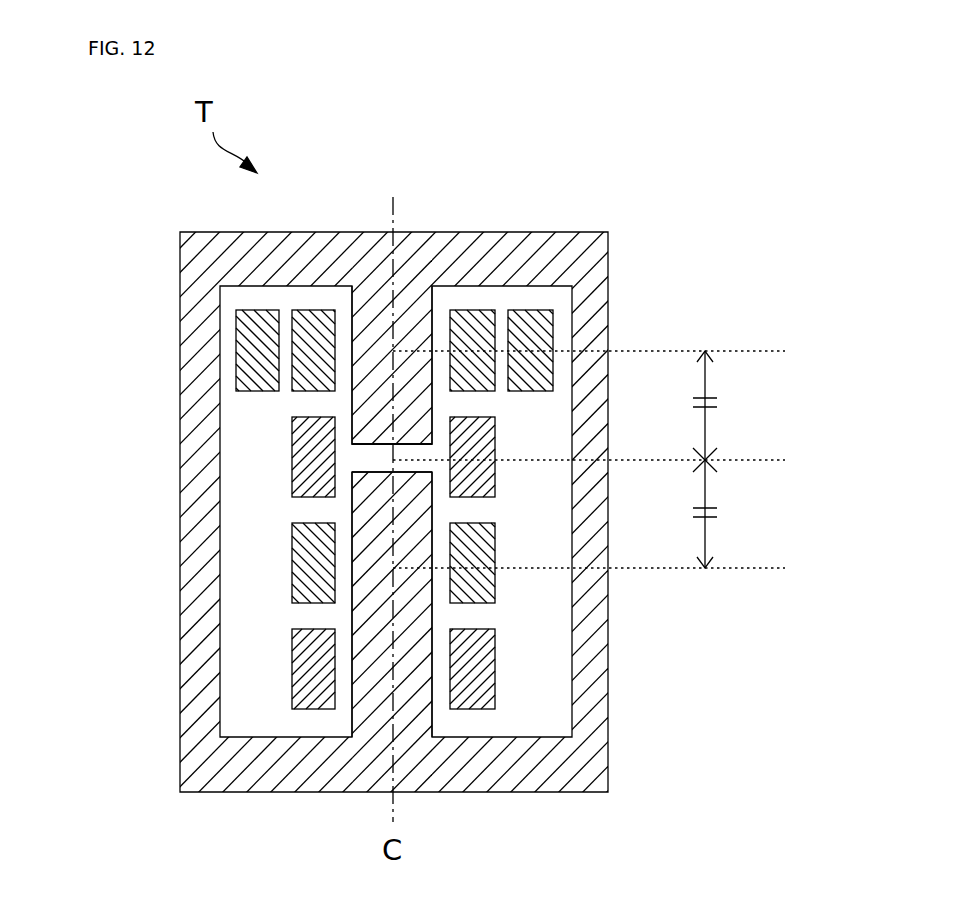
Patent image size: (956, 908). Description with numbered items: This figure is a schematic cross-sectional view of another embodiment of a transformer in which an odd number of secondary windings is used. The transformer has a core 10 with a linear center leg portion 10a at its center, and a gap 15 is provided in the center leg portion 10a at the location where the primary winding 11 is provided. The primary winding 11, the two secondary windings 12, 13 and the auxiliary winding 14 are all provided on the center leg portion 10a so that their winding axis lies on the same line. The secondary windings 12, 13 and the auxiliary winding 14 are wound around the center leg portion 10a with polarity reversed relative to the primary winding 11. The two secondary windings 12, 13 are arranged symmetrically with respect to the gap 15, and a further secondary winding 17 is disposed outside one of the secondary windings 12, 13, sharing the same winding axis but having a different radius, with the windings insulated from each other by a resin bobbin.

The core 10 is at (330, 232).
The center leg portion 10a is at (412, 302).
The primary winding 11 is at (295, 432).
The secondary winding 12 is at (295, 390).
The secondary winding 13 is at (298, 570).
The auxiliary winding 14 is at (298, 655).
The gap 15 is at (362, 458).
The secondary winding 17 is at (238, 317).